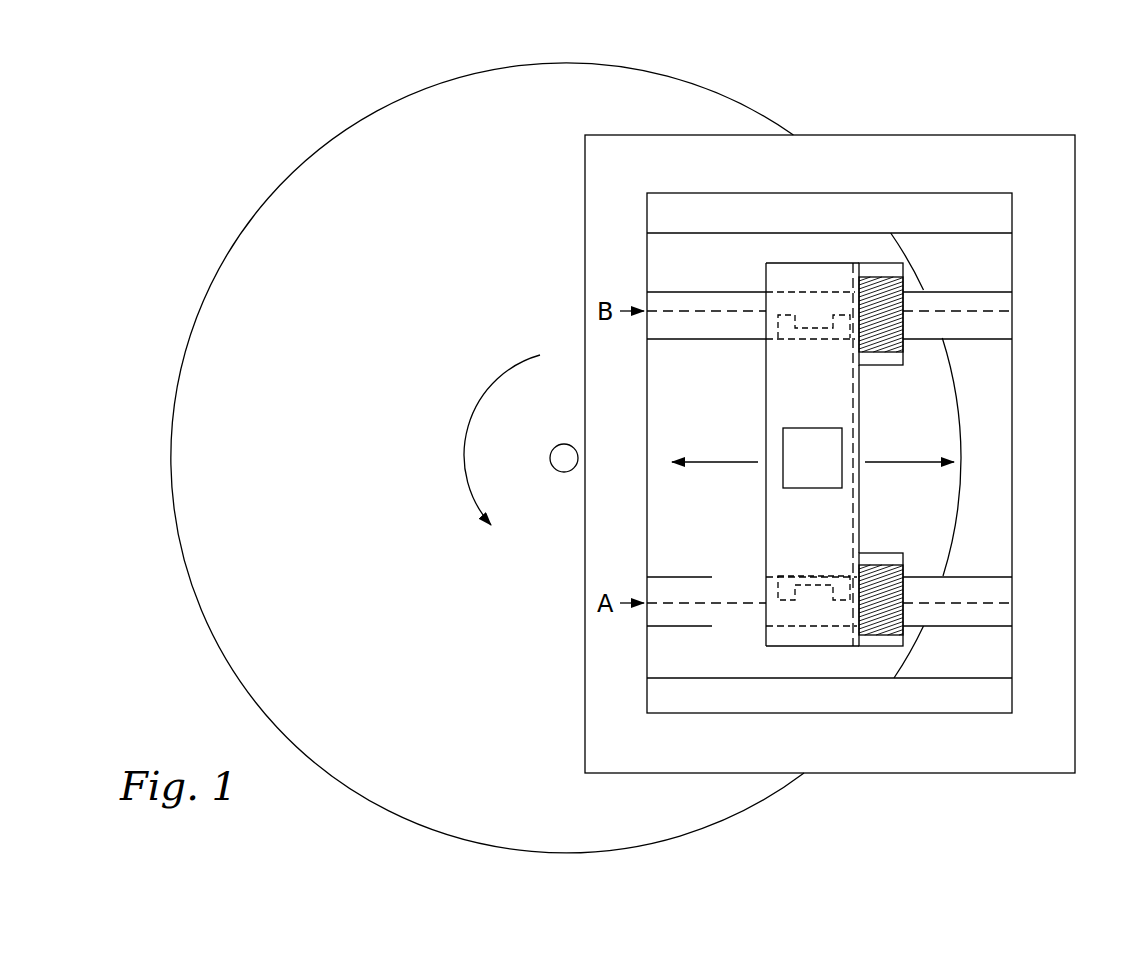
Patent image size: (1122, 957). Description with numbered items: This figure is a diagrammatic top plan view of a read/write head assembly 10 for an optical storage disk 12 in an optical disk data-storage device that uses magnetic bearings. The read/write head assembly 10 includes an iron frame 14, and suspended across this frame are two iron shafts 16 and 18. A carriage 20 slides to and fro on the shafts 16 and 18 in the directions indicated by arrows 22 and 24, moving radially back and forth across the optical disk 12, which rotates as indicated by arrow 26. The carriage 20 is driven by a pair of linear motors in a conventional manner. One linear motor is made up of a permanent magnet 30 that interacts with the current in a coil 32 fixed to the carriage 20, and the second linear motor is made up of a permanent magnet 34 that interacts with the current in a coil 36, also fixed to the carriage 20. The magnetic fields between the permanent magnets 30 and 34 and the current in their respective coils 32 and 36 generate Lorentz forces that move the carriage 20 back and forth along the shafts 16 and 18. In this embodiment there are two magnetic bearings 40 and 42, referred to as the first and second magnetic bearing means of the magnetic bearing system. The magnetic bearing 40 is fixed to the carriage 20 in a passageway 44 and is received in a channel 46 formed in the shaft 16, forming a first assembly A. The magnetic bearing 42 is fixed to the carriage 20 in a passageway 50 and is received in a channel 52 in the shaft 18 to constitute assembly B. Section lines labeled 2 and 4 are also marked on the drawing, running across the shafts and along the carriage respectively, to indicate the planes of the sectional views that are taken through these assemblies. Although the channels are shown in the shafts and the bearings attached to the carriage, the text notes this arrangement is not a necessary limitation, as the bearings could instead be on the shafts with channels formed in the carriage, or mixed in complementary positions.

The read/write head assembly 10 is at (884, 128).
The optical storage disk 12 is at (460, 246).
The iron frame 14 is at (1054, 477).
The iron shaft 16 is at (1000, 596).
The iron shaft 18 is at (1000, 326).
The carriage 20 is at (764, 410).
The arrow 22 is at (698, 466).
The arrow 24 is at (900, 466).
The arrow 26 is at (481, 408).
The permanent magnet 30 is at (830, 709).
The coil 32 is at (904, 552).
The permanent magnet 34 is at (858, 226).
The coil 36 is at (880, 366).
The magnetic bearing 40 is at (820, 548).
The magnetic bearing 42 is at (824, 344).
The passageway 44 is at (778, 574).
The channel 46 is at (700, 605).
The passageway 50 is at (768, 290).
The channel 52 is at (702, 313).
The section line 2- 2 is at (766, 577).
The section line 4- 4 is at (853, 263).